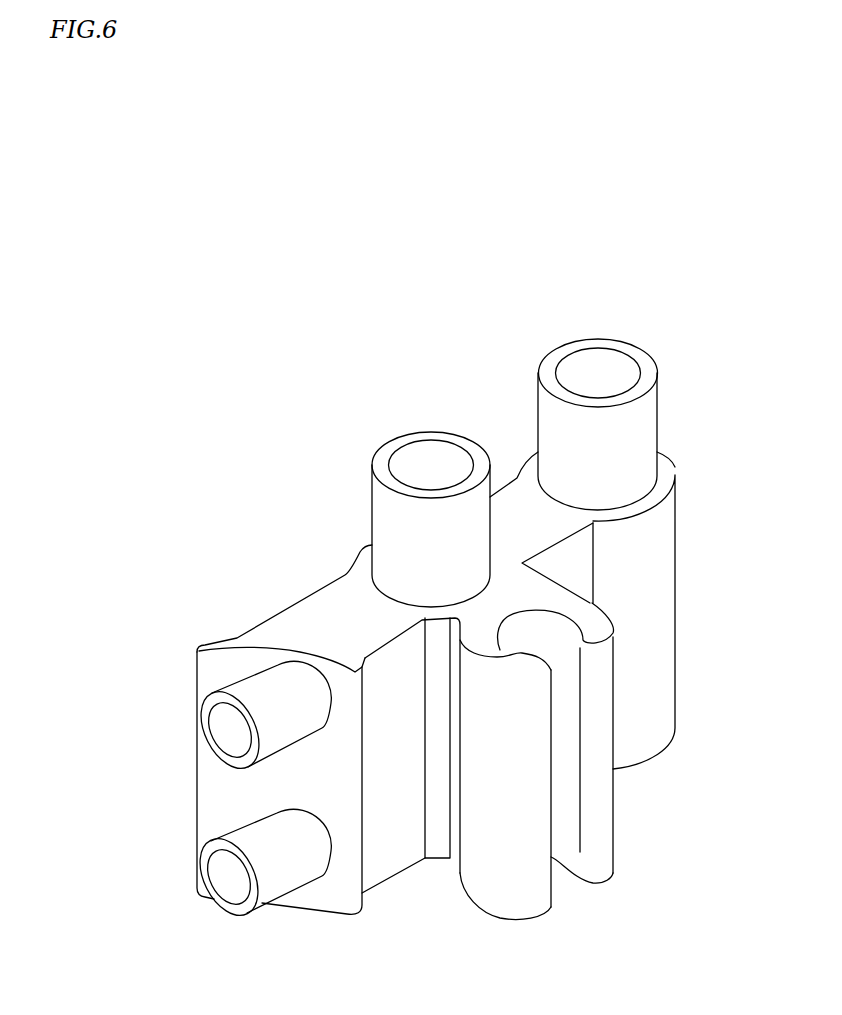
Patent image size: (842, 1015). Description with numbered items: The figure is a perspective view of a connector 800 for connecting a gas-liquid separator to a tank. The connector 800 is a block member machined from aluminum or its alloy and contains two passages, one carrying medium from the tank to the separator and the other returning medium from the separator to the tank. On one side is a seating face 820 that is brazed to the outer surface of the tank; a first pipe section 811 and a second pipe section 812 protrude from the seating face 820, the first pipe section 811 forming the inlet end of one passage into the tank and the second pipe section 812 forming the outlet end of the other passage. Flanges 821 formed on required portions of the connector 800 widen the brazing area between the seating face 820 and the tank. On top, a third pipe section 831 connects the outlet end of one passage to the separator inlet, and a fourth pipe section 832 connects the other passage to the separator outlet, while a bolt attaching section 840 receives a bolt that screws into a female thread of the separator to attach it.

The connector 800 is at (246, 506).
The first pipe section 811 is at (220, 693).
The second pipe section 812 is at (222, 918).
The seating face 820 is at (230, 783).
The flanges 821 is at (206, 642).
The third pipe section 831 is at (428, 430).
The fourth pipe section 832 is at (596, 338).
The bolt attaching section 840 is at (613, 797).